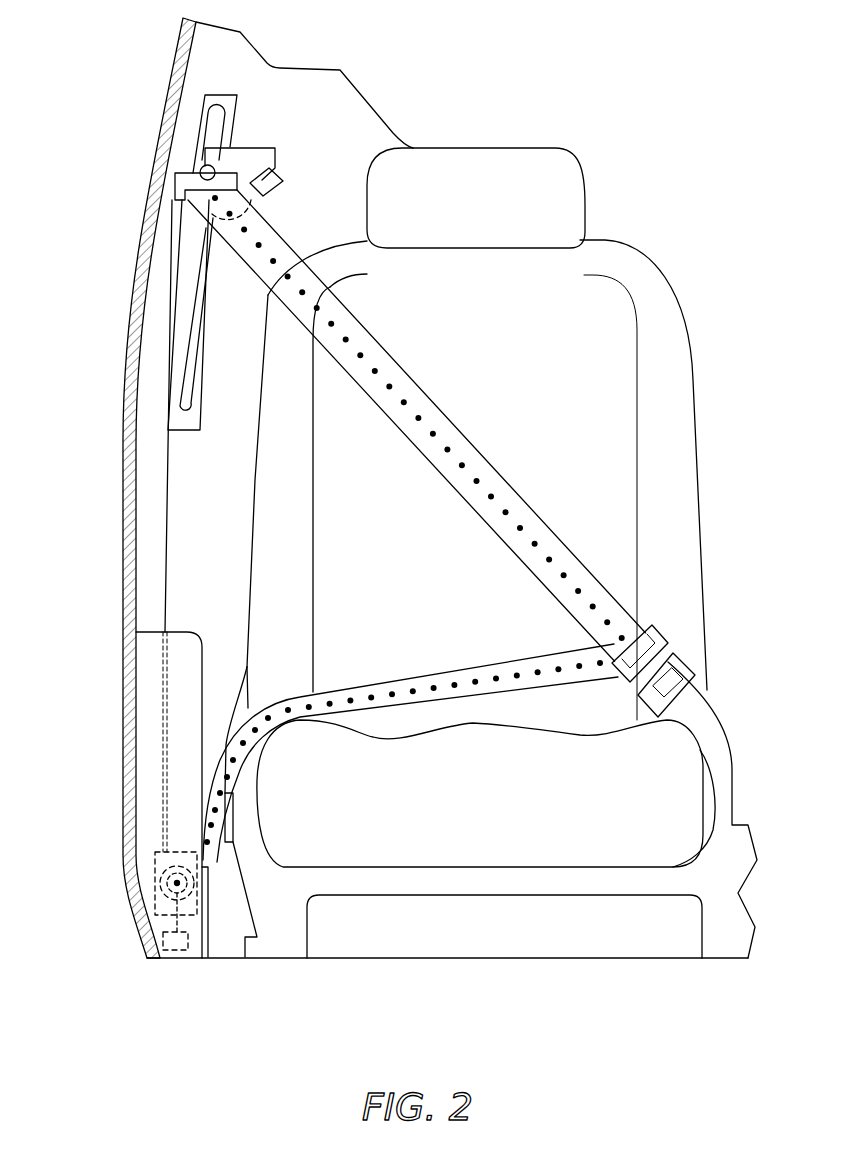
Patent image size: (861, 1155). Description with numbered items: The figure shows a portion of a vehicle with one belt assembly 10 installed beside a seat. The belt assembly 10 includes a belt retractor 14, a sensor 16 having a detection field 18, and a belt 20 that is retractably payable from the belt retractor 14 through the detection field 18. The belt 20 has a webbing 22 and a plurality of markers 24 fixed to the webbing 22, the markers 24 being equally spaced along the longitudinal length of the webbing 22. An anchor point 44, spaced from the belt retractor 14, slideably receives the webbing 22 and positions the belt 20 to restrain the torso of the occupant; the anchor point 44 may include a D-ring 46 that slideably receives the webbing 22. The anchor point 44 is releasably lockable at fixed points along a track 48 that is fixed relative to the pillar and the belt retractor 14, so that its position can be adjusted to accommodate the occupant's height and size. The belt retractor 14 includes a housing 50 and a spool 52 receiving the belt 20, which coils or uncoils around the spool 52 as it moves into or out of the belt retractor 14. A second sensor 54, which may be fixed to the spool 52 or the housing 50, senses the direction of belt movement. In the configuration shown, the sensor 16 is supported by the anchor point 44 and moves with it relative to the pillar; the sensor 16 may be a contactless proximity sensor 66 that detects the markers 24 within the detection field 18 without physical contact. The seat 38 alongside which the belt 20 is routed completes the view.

The belt assembly 10 is at (68, 427).
The belt retractor 14 is at (148, 871).
The sensor 16 is at (315, 170).
The detection field 18 is at (268, 208).
The belt 20 is at (470, 424).
The webbing 22 is at (531, 504).
The markers 24 is at (406, 398).
The vehicle seat 38 is at (703, 525).
The anchor point 44 is at (170, 183).
The D-ring 46 is at (190, 168).
The track 48 is at (237, 115).
The housing 50 is at (158, 851).
The spool 52 is at (177, 878).
The second sensor 54 is at (177, 951).
The proximity sensor 66 is at (280, 177).